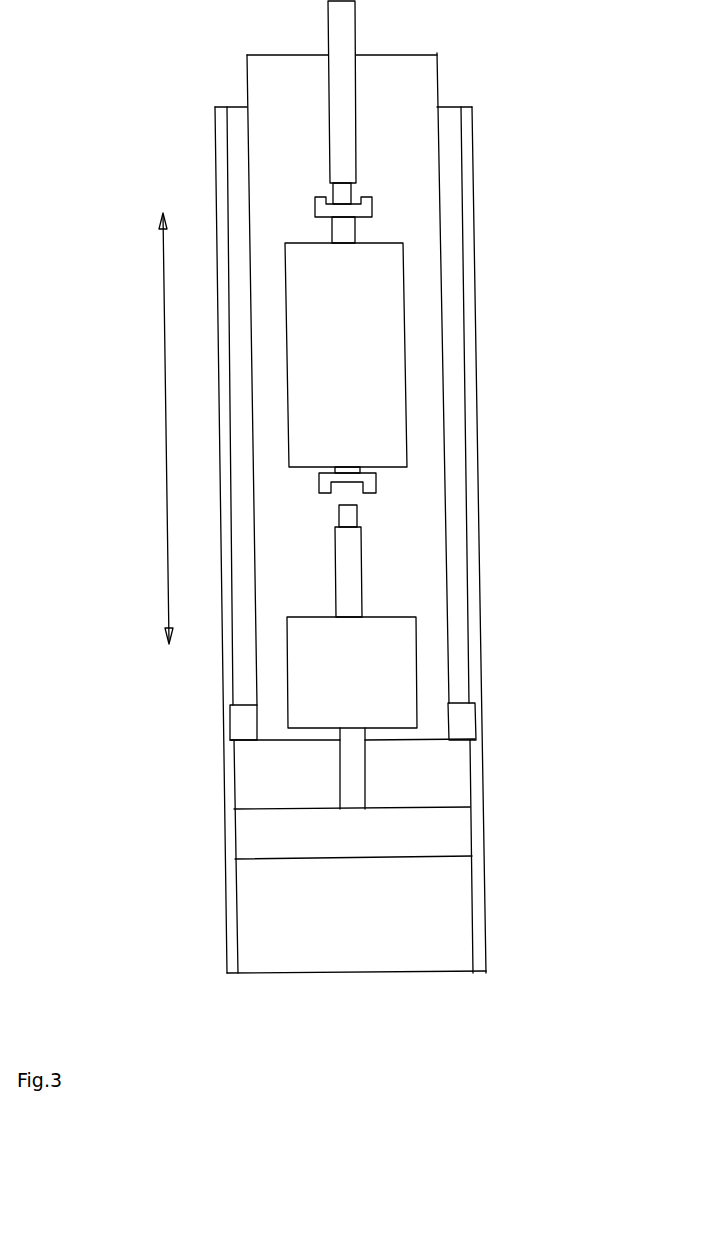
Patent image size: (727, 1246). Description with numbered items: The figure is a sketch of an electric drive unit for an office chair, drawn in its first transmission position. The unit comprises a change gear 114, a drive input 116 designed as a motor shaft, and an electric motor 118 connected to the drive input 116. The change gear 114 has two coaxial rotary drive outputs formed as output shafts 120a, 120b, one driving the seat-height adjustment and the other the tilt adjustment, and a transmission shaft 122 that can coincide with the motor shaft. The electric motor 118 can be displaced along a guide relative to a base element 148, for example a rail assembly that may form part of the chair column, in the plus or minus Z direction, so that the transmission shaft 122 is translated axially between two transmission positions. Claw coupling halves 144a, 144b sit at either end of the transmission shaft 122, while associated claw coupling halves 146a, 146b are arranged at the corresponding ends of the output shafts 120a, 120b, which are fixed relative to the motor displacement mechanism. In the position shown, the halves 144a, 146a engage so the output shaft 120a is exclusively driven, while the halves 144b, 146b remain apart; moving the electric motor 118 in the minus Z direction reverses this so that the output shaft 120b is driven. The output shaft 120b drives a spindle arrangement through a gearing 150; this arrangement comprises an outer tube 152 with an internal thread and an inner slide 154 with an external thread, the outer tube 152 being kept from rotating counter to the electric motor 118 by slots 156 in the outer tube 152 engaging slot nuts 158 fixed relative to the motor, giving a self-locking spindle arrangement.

The change gear 114 is at (262, 295).
The drive input 116 is at (237, 203).
The electric motor 118 is at (393, 332).
The output shaft 120a is at (343, 82).
The output shaft 120b is at (347, 578).
The transmission shaft 122 is at (337, 228).
The claw coupling half 144a is at (367, 205).
The claw coupling half 144b is at (375, 477).
The claw coupling half 146a is at (347, 192).
The claw coupling half 146b is at (353, 515).
The base element 148 is at (422, 59).
The gearing 150 is at (400, 660).
The outer tube 152 is at (480, 616).
The inner slide 154 is at (420, 828).
The slots 156 is at (473, 532).
The slot nuts 158 is at (469, 722).